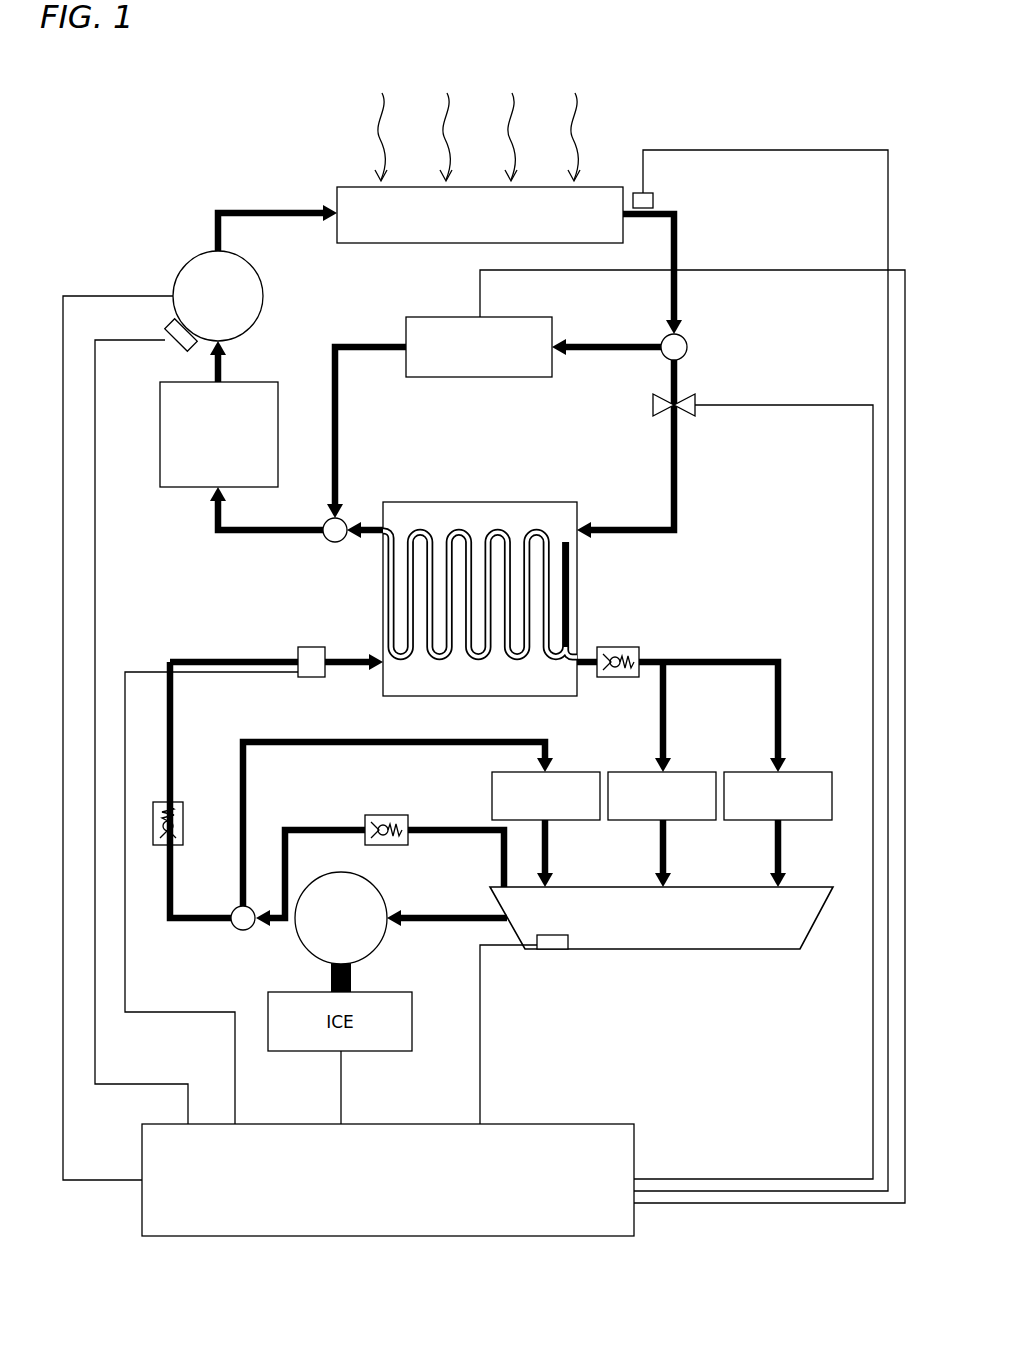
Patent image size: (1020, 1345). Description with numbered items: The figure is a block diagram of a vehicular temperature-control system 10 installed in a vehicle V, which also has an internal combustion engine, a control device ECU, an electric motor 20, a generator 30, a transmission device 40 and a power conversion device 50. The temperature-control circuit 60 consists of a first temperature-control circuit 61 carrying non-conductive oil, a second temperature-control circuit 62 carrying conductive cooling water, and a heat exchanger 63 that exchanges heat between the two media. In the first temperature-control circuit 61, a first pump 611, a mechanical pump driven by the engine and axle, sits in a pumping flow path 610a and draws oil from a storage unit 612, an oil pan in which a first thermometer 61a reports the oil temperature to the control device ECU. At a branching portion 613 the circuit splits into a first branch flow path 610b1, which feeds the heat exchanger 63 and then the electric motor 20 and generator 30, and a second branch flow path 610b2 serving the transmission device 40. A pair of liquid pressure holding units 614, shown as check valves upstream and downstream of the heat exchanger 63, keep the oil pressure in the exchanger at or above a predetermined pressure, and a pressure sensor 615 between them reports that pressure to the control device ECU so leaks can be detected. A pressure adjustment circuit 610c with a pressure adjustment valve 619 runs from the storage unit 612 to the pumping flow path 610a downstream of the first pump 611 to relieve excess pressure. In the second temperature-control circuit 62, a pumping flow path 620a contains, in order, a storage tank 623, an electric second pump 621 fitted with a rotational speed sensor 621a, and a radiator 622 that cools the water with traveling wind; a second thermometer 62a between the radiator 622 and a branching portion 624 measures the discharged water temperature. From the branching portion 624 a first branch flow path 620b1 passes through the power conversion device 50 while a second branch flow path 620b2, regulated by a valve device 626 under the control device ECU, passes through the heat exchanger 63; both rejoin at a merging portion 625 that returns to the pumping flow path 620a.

The vehicular temperature-control system 10 is at (288, 146).
The vehicle V is at (796, 124).
The electric motor 20 is at (815, 772).
The generator 30 is at (700, 772).
The transmission device 40 is at (585, 772).
The power conversion device 50 is at (478, 378).
The temperature-control circuit 60 is at (686, 205).
The first temperature-control circuit 61 is at (726, 632).
The first thermometer 61a is at (552, 949).
The second temperature-control circuit 62 is at (694, 453).
The second thermometer 62a is at (643, 192).
The heat exchanger 63 is at (578, 585).
The pumping flow path 610a is at (446, 917).
The first branch flow path 610b1 is at (173, 722).
The second branch flow path 610b2 is at (247, 812).
The pressure adjustment circuit 610c is at (418, 830).
The first pump 611 is at (330, 873).
The storage unit 612 is at (710, 950).
The branching portion 613 is at (243, 931).
The liquid pressure holding units 614 is at (622, 648).
The pressure sensor 615 is at (305, 647).
The pressure adjustment valve 619 is at (377, 815).
The pumping flow path 620a is at (216, 212).
The first branch flow path 620b1 is at (605, 346).
The second branch flow path 620b2 is at (620, 529).
The second pump 621 is at (186, 262).
The rotational speed sensor 621a is at (172, 341).
The radiator 622 is at (370, 243).
The storage tank 623 is at (262, 382).
The branching portion 624 is at (688, 348).
The merging portion 625 is at (337, 543).
The valve device 626 is at (653, 405).
The control device ECU is at (460, 1237).